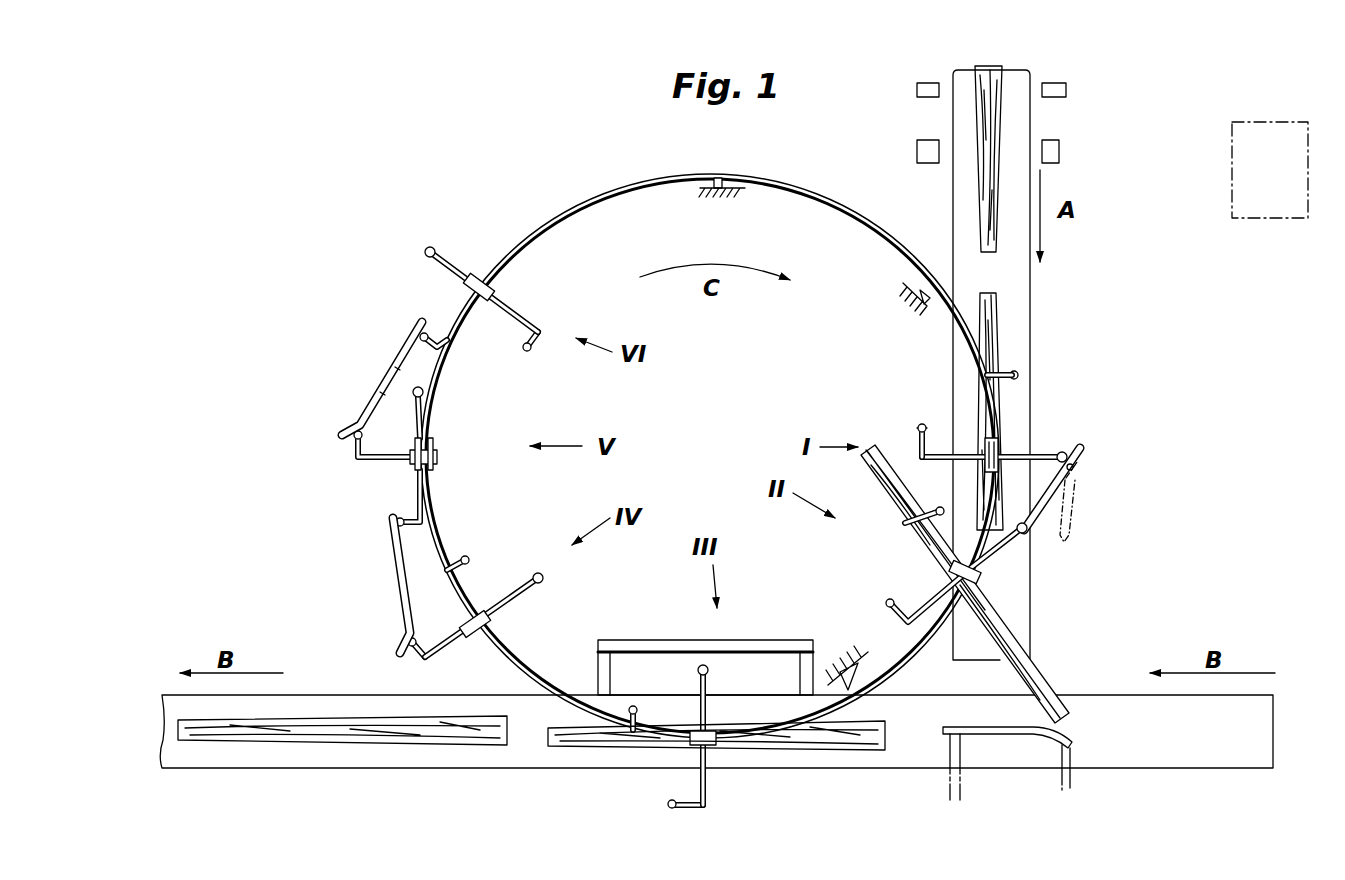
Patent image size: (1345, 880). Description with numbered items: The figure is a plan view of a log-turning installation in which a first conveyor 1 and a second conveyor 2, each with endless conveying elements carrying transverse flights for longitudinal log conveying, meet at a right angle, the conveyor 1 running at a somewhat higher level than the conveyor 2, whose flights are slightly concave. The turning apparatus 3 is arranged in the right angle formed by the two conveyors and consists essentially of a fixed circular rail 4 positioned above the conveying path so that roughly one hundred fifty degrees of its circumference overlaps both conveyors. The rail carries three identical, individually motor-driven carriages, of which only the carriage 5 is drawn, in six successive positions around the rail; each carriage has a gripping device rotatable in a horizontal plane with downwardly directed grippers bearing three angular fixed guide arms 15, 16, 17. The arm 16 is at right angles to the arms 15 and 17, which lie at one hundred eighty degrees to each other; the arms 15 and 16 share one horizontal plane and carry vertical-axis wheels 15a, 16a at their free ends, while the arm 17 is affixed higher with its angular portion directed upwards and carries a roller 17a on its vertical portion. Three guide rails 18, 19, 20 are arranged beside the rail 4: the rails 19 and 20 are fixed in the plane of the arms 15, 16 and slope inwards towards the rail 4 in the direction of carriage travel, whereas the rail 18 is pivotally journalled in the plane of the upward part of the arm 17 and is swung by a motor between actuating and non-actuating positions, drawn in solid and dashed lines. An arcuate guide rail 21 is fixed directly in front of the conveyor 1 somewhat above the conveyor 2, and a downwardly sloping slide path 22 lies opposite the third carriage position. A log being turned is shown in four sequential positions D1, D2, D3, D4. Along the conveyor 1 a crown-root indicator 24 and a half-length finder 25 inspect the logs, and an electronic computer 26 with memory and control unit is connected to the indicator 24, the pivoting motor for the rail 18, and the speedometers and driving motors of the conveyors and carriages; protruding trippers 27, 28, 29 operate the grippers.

The first conveyor 1 is at (1013, 606).
The second conveyor 2 is at (1120, 700).
The turning apparatus 3 is at (372, 222).
The circular rail 4 is at (548, 220).
The carriage 5 is at (1000, 450).
The guide arm 15 is at (922, 452).
The wheel 15a is at (924, 424).
The guide arm 16 is at (1012, 372).
The wheel 16a is at (1020, 377).
The guide arm 17 is at (1065, 452).
The roller 17a is at (1082, 452).
The guide rail 18 is at (1076, 493).
The guide rail 19 is at (398, 602).
The guide rail 20 is at (405, 345).
The arcuate guide rail 21 is at (1030, 735).
The slide path 22 is at (812, 645).
The crown-root indicator 24 is at (920, 88).
The half-length finder 25 is at (925, 153).
The electronic computer 26 is at (1240, 172).
The tripper 27 is at (718, 180).
The tripper 28 is at (925, 288).
The tripper 29 is at (868, 695).
The log position D1 is at (1000, 322).
The log position D2 is at (990, 640).
The log position D3 is at (838, 748).
The log position D4 is at (425, 745).